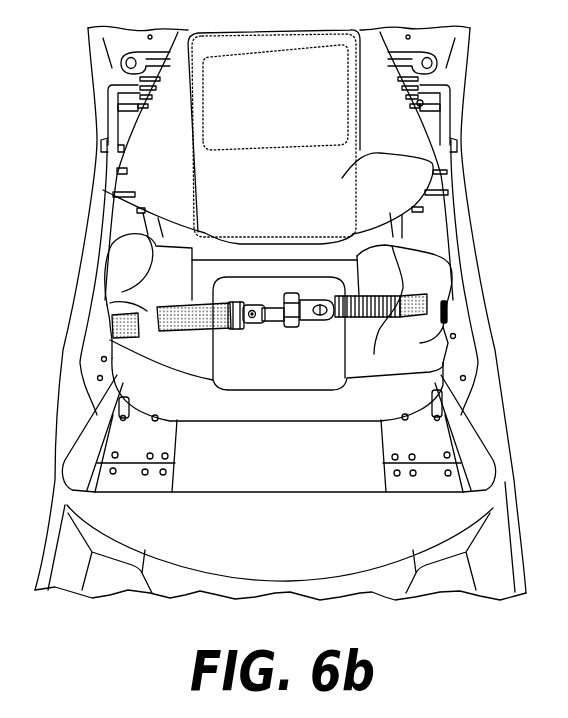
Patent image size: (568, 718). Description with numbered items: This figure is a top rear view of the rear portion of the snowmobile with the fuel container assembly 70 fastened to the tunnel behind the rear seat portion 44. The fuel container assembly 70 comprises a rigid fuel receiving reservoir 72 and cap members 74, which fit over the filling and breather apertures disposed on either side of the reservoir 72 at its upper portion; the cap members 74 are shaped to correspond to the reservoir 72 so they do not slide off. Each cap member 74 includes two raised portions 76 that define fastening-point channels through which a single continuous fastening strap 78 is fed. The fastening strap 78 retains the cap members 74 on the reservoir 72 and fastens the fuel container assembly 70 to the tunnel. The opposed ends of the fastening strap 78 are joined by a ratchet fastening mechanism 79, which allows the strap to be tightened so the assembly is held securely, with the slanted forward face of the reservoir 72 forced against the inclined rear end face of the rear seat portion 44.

The rear seat portion 44 is at (437, 168).
The fuel container assembly 70 is at (457, 356).
The fuel receiving reservoir 72 is at (450, 387).
The cap member 74 is at (126, 270).
The raised portion 76 is at (145, 312).
The fastening strap 78 is at (373, 340).
The ratchet fastening mechanism 79 is at (271, 312).